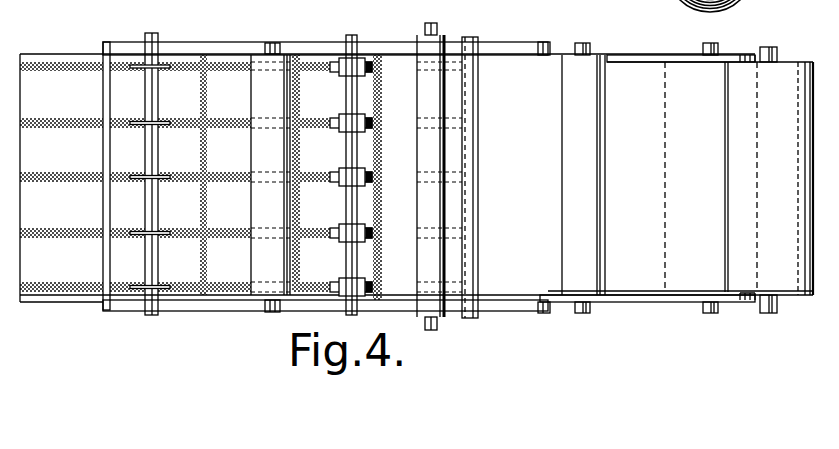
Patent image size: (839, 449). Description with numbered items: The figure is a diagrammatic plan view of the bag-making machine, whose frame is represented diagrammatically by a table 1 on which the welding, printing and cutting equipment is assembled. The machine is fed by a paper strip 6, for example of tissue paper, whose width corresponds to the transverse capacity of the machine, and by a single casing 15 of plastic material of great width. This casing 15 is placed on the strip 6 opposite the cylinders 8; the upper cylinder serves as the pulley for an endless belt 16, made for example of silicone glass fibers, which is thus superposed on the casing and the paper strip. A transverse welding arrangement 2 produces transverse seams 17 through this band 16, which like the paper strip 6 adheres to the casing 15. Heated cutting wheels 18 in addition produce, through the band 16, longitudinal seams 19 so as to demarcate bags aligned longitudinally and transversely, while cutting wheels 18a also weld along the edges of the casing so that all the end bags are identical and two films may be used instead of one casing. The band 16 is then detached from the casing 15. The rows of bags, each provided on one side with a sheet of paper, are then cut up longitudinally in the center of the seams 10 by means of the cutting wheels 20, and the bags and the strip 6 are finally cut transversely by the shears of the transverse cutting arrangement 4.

The table 1 is at (509, 44).
The transverse welding arrangement 2 is at (478, 202).
The transverse cutting arrangement 4 is at (105, 45).
The paper strip 6 is at (642, 60).
The cylinders 8 is at (590, 65).
The seams 10 is at (420, 133).
The casing 15 is at (680, 279).
The endless belt 16 is at (511, 280).
The transverse seams 17 is at (200, 150).
The heated cutting wheels 18 is at (336, 227).
The cutting wheels 18a is at (368, 61).
The longitudinal seams 19 is at (315, 70).
The cutting wheels 20 is at (168, 84).